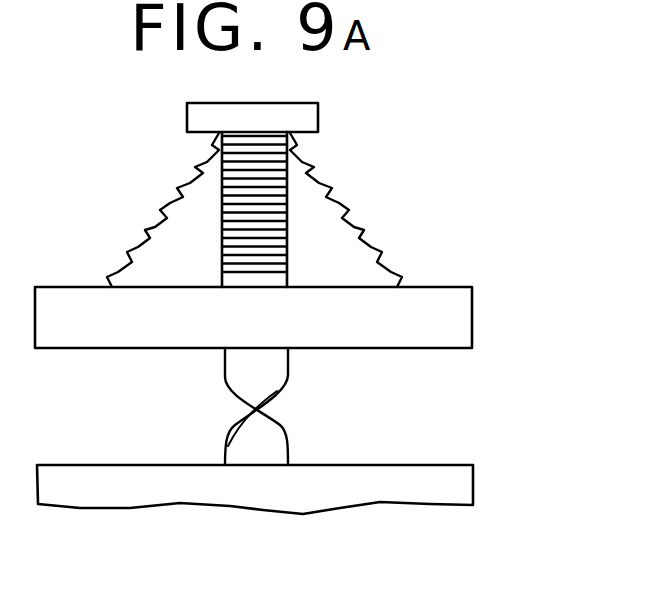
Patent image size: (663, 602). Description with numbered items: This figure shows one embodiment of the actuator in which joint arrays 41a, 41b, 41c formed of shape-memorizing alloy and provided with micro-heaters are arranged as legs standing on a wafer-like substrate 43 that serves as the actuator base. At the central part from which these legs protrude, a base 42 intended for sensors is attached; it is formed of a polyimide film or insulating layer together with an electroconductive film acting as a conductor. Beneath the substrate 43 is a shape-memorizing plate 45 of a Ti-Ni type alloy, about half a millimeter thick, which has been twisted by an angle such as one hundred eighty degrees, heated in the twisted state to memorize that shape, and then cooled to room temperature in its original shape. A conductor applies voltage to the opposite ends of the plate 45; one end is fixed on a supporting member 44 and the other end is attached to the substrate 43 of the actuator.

The base 42 is at (310, 121).
The joint array 41a is at (178, 188).
The joint array 41b is at (287, 263).
The joint array 41c is at (345, 207).
The substrate 43 is at (462, 322).
The shape-memorizing plate 45 is at (277, 379).
The supporting member 44 is at (462, 491).